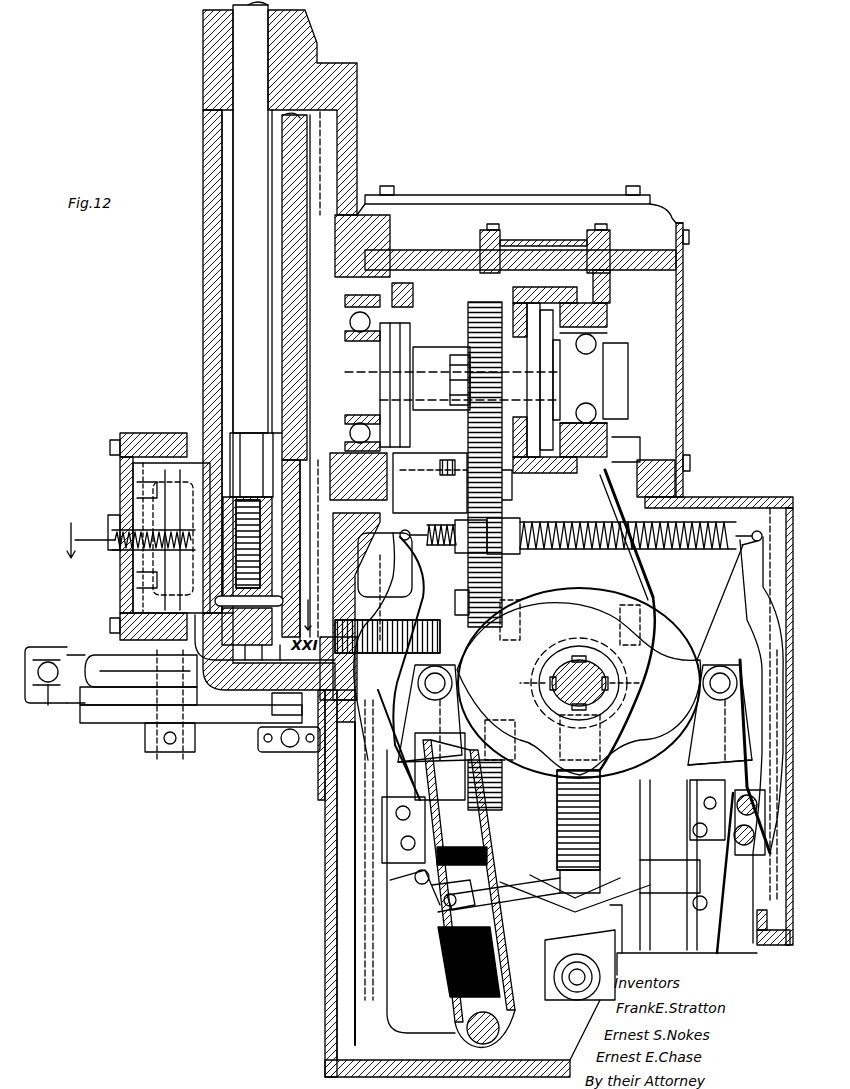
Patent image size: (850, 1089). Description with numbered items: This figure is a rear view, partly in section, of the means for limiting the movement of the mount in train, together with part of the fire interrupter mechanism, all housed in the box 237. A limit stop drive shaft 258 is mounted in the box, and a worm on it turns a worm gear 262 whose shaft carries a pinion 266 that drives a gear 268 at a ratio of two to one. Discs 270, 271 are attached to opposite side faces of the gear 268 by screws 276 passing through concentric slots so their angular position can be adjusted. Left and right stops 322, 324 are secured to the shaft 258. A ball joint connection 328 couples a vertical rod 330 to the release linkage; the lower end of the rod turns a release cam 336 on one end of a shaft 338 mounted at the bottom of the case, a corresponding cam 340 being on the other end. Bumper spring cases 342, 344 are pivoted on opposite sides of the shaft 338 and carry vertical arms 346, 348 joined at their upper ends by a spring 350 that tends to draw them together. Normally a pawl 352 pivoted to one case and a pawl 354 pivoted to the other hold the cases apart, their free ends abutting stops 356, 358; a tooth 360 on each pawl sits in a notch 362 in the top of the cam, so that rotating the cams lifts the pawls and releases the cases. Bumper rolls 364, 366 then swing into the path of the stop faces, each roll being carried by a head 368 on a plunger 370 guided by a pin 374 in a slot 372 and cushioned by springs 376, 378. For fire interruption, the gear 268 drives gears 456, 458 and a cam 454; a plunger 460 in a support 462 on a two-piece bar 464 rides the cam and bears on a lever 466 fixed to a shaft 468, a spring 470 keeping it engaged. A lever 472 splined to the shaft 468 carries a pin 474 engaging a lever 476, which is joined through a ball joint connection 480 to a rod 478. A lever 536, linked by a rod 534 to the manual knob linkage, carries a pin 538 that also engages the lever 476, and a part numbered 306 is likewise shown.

The box 237 is at (698, 306).
The limit stop drive shaft 258 is at (582, 662).
The worm gear 262 is at (600, 780).
The pinion 266 is at (503, 786).
The gear 268 is at (460, 588).
The disc 270 is at (508, 572).
The disc 271 is at (415, 560).
The screws 276 is at (524, 524).
The spring 306 is at (641, 524).
The left stop 322 is at (552, 595).
The right stop 324 is at (607, 585).
The ball joint connection 328 is at (640, 438).
The vertical rod 330 is at (655, 566).
The release cam 336 is at (620, 912).
The shaft 338 is at (570, 978).
The cam 340 is at (548, 945).
The bumper spring case 342 is at (450, 968).
The bumper spring case 344 is at (590, 900).
The vertical arm 346 is at (404, 580).
The vertical arm 348 is at (748, 597).
The spring 350 is at (700, 497).
The pawl 352 is at (520, 900).
The pawl 354 is at (690, 870).
The stop 356 is at (440, 905).
The stop 358 is at (688, 915).
The tooth 360 is at (565, 878).
The notch 362 is at (570, 895).
The bumper roll 364 is at (436, 666).
The bumper roll 366 is at (721, 666).
The head 368 is at (575, 732).
The plunger 370 is at (700, 733).
The slot 372 is at (690, 843).
The pin 374 is at (442, 820).
The spring 376 is at (448, 985).
The spring 378 is at (465, 1018).
The cam 454 is at (296, 192).
The gear 456 is at (505, 490).
The gear 458 is at (480, 302).
The plunger 460 is at (283, 620).
The support 462 is at (220, 463).
The two-piece bar 464 is at (243, 265).
The lever 466 is at (210, 492).
The shaft 468 is at (120, 468).
The spring 470 is at (126, 544).
The lever 472 is at (118, 667).
The pin 474 is at (80, 657).
The lever 476 is at (138, 695).
The rod 478 is at (60, 705).
The ball joint connection 480 is at (40, 708).
The rod 534 is at (290, 748).
The lever 536 is at (228, 715).
The pin 538 is at (98, 715).